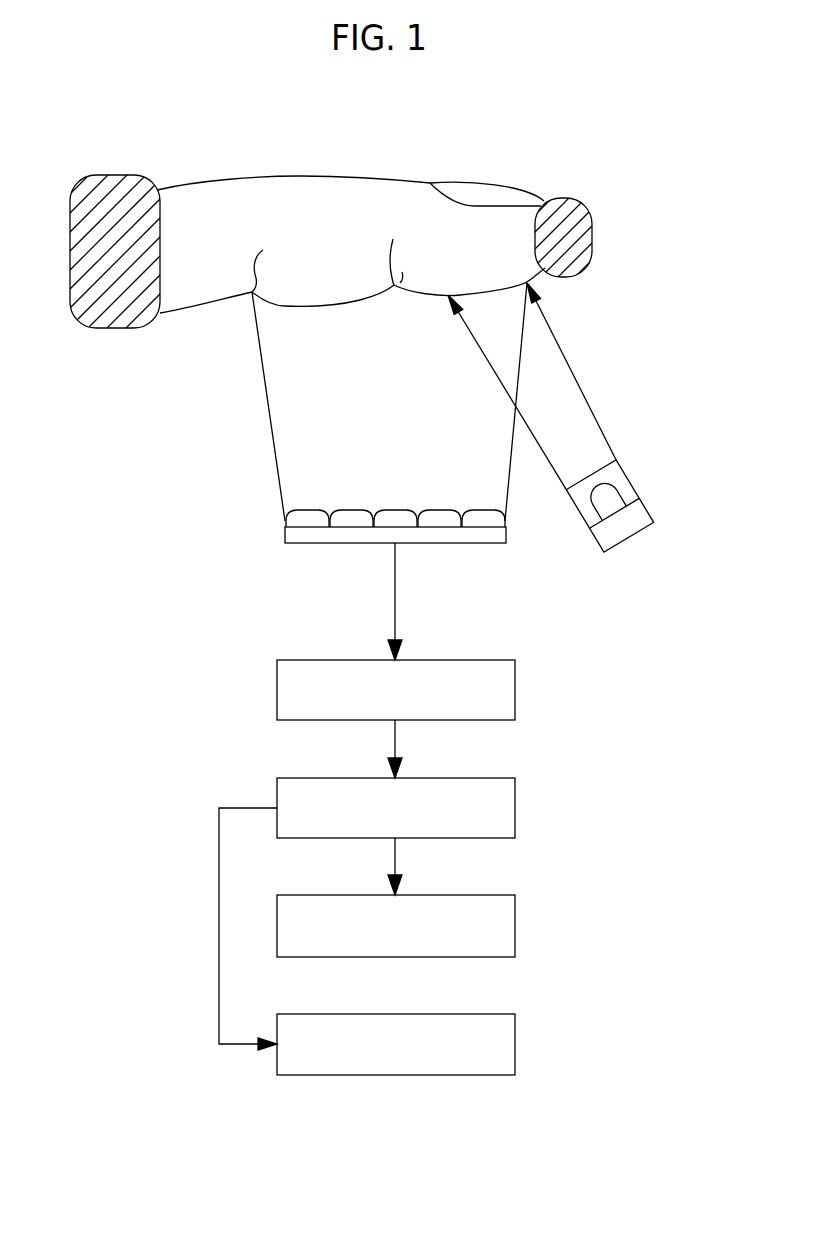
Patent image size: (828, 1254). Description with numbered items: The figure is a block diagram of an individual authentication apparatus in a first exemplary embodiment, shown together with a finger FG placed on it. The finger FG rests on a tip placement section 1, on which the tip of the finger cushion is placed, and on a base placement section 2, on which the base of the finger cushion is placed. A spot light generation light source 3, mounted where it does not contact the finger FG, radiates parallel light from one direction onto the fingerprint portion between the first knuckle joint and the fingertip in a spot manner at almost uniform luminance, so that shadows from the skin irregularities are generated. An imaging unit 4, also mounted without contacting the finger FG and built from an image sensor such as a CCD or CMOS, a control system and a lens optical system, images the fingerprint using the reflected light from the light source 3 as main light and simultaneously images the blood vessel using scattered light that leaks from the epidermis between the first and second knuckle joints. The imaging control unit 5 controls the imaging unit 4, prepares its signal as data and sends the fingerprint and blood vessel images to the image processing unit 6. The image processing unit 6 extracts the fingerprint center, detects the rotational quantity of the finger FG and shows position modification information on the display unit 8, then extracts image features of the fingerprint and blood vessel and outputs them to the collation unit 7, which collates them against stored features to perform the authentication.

The finger FG is at (270, 176).
The tip placement section 1 is at (594, 219).
The base placement section 2 is at (117, 175).
The spot light generation light source 3 is at (617, 458).
The imaging unit 4 is at (285, 542).
The imaging control unit 5 is at (396, 690).
The image processing unit 6 is at (396, 808).
The collation unit 7 is at (396, 926).
The display unit 8 is at (396, 1044).